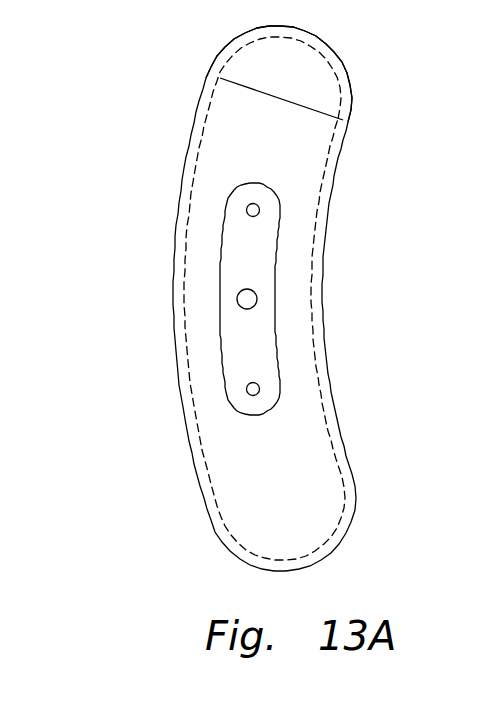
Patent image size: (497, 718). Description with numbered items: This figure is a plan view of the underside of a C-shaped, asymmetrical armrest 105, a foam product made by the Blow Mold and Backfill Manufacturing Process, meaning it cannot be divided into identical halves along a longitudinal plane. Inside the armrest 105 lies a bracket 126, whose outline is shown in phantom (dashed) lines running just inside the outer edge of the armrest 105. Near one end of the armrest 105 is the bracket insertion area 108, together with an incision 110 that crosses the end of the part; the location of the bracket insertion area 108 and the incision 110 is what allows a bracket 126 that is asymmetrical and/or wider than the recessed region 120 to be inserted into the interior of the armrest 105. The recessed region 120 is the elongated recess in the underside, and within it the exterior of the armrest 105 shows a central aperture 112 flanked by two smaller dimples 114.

The armrest 105 is at (142, 102).
The bracket insertion area 108 is at (315, 98).
The incision 110 is at (278, 100).
The aperture 112 is at (245, 298).
The dimples 114 is at (250, 209).
The recessed region 120 is at (259, 349).
The bracket 126 is at (311, 265).